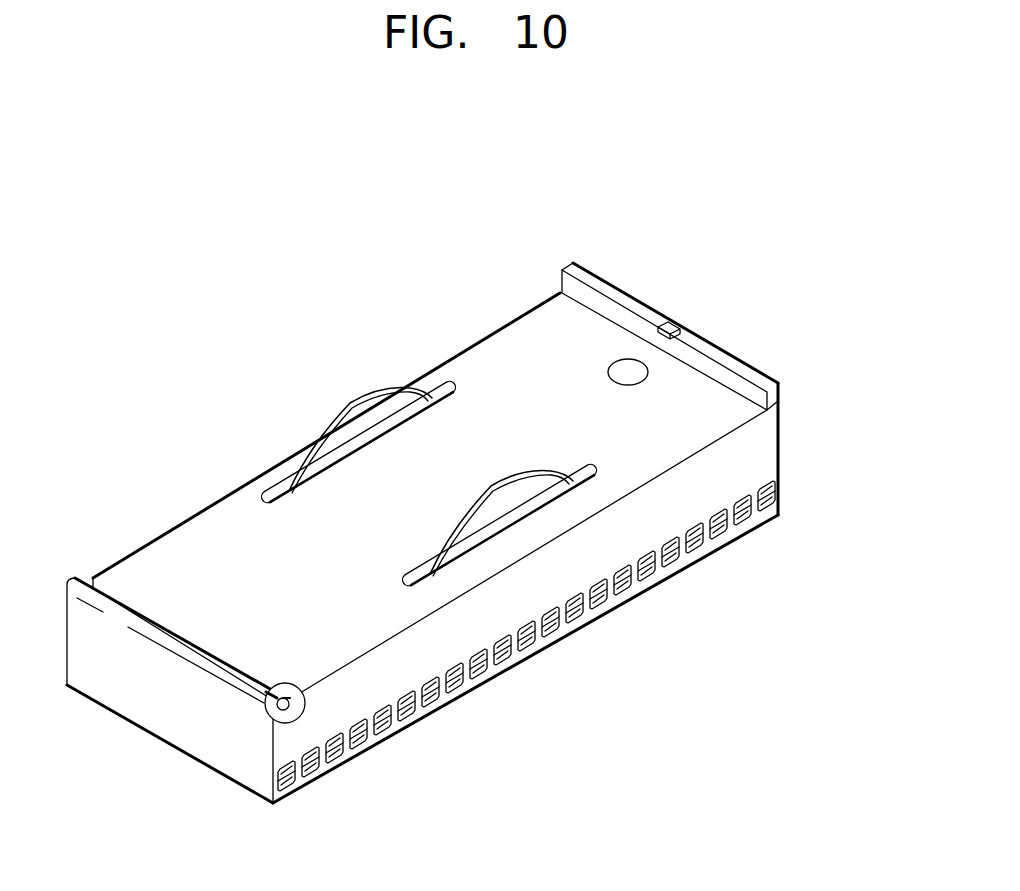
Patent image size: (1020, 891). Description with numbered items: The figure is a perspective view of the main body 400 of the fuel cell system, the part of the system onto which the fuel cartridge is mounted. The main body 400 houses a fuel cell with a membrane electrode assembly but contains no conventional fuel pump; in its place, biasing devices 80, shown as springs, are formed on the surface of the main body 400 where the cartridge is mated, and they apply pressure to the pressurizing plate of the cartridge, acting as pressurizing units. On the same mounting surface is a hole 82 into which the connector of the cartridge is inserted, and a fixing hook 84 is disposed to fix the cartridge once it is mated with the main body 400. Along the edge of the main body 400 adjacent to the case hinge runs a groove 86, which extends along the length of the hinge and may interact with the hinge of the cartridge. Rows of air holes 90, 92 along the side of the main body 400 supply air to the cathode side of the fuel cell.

The main body 400 is at (773, 459).
The biasing devices 80 is at (443, 533).
The hole 82 is at (607, 366).
The fixing hook 84 is at (672, 322).
The groove 86 is at (270, 714).
The air holes 90 is at (500, 673).
The air holes 92 is at (480, 687).